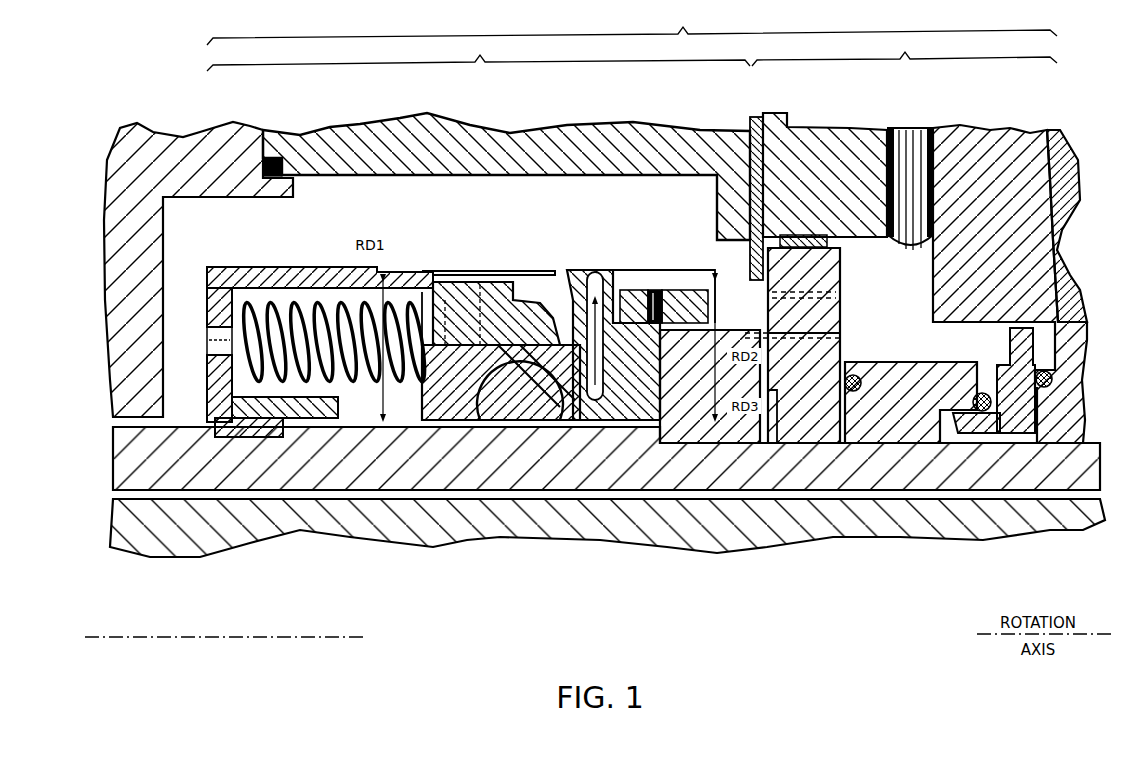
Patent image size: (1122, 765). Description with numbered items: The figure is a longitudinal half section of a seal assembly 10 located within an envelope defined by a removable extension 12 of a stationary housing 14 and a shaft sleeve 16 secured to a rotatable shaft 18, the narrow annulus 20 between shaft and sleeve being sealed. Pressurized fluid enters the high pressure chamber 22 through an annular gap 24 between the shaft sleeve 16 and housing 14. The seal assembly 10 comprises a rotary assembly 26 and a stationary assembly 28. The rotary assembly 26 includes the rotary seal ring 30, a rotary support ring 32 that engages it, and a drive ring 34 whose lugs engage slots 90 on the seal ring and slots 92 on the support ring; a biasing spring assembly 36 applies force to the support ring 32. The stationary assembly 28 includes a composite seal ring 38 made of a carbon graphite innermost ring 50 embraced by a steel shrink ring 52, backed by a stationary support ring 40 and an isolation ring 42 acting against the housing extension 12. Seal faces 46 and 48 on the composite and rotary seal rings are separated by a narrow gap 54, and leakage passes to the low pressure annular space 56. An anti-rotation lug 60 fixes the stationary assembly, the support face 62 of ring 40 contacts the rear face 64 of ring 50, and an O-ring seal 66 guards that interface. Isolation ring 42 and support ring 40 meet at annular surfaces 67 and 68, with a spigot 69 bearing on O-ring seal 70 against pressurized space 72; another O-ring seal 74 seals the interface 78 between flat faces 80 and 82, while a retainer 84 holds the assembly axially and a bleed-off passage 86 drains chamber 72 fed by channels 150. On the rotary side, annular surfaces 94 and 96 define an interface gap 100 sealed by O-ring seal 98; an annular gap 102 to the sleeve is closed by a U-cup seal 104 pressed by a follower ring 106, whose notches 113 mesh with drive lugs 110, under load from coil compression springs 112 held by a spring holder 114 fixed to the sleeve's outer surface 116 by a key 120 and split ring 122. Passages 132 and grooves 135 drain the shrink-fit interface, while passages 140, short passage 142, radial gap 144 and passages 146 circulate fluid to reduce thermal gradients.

The seal assembly 10 is at (632, 24).
The removable extension 12 is at (1028, 207).
The stationary housing 14 is at (207, 153).
The shaft sleeve 16 is at (490, 460).
The rotatable shaft 18 is at (845, 520).
The narrow annulus 20 is at (407, 440).
The chamber 22 is at (377, 207).
The annular gap 24 is at (155, 427).
The rotary assembly 26 is at (478, 52).
The stationary assembly 28 is at (904, 49).
The rotary seal ring 30 is at (690, 420).
The rotary support ring 32 is at (567, 300).
The drive ring 34 is at (723, 300).
The biasing spring assembly 36 is at (315, 275).
The composite seal ring 38 is at (807, 233).
The stationary support ring 40 is at (872, 568).
The isolation ring 42 is at (1030, 420).
The seal face 46 is at (745, 350).
The seal face 48 is at (772, 395).
The innermost ring 50 is at (800, 390).
The shrink ring 52 is at (817, 300).
The gap 54 is at (720, 330).
The annular space 56 is at (785, 395).
The anti-rotation lug 60 is at (837, 247).
The support face 62 is at (815, 380).
The rear face 64 is at (858, 395).
The static O-ring seal 66 is at (860, 375).
The annular surface 67 is at (965, 425).
The annular surface 68 is at (985, 412).
The spigot 69 is at (960, 440).
The O-ring seal 70 is at (988, 320).
The annular space 72 is at (920, 340).
The O-ring seal 74 is at (1052, 137).
The interface 78 is at (1040, 420).
The flat face 80 is at (1070, 440).
The flat face 82 is at (1044, 390).
The retainer 84 is at (783, 233).
The bleed-off passage 86 is at (900, 180).
The slots 90 is at (755, 200).
The slots 92 is at (633, 300).
The annular surface 94 is at (680, 340).
The annular surface 96 is at (632, 330).
The O-ring seal 98 is at (687, 300).
The interface gap 100 is at (600, 400).
The annular gap 102 is at (560, 430).
The U-cup seal 104 is at (527, 400).
The follower ring 106 is at (455, 375).
The drive lugs 110 is at (467, 330).
The coil compression springs 112 is at (350, 370).
The notches 113 is at (417, 300).
The spring holder 114 is at (310, 400).
The outer surface 116 is at (383, 410).
The key 120 is at (232, 345).
The split ring 122 is at (220, 432).
The passages 132 is at (830, 338).
The grooves 135 is at (830, 333).
The passages 140 is at (593, 275).
The short passage 142 is at (640, 415).
The radial gap 144 is at (640, 290).
The passages 146 is at (660, 290).
The channels 150 is at (845, 283).